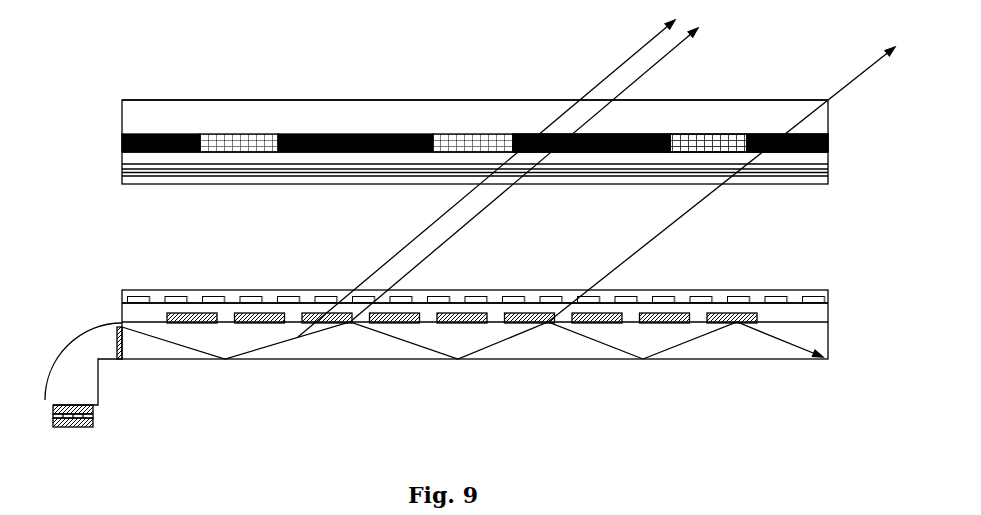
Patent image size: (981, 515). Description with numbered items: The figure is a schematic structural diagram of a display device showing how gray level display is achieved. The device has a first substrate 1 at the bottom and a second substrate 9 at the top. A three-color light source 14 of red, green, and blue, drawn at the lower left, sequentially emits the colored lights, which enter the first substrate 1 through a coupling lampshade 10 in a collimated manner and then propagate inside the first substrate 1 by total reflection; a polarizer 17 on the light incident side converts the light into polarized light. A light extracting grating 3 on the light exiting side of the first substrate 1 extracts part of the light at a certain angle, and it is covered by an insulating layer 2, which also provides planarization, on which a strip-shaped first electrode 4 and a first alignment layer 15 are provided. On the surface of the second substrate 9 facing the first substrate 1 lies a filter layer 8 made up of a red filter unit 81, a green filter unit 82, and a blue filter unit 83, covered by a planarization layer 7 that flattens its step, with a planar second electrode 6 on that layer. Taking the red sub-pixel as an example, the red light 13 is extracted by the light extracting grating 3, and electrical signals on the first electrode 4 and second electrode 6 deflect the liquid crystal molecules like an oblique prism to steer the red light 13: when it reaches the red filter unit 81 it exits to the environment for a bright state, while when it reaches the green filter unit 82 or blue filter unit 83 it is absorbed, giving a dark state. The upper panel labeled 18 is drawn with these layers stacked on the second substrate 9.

The first substrate 1 is at (828, 347).
The insulating layer 2 is at (828, 317).
The light extracting grating 3 is at (737, 322).
The first electrode 4 is at (828, 303).
The second electrode 6 is at (828, 169).
The planarization layer 7 is at (828, 152).
The filter layer 8 is at (828, 135).
The second substrate 9 is at (828, 100).
The coupling lampshade 10 is at (63, 380).
The red light 13 is at (407, 243).
The light source 14 is at (88, 418).
The first alignment layer 15 is at (828, 290).
The polarizer 17 is at (123, 360).
The display panel 18 is at (828, 184).
The red filter unit 81 is at (772, 135).
The green filter unit 82 is at (698, 135).
The blue filter unit 83 is at (620, 135).